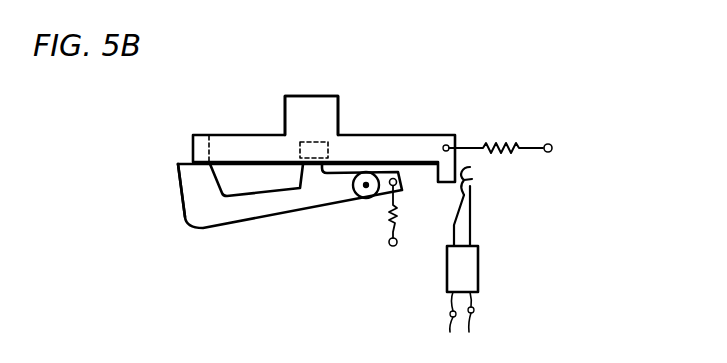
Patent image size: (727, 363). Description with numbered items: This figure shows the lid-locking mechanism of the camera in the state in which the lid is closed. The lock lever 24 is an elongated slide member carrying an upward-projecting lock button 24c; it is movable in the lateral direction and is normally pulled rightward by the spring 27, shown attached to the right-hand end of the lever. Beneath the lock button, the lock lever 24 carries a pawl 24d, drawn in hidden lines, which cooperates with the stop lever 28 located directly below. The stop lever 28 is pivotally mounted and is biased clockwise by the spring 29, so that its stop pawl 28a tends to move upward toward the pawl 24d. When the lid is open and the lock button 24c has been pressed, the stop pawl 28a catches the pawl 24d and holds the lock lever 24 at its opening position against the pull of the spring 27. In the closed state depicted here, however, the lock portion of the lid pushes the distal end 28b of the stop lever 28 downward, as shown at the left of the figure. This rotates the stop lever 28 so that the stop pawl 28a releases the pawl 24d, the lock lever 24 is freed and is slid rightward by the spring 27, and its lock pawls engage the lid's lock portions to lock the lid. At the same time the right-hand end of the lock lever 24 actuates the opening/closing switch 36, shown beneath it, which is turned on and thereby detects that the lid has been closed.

The lock lever 24 is at (415, 147).
The lock button 24c is at (310, 100).
The pawl 24d is at (322, 141).
The spring 27 is at (500, 140).
The stop lever 28 is at (260, 205).
The stop pawl 28a is at (316, 164).
The distal end 28b is at (183, 165).
The spring 29 is at (380, 217).
The opening/closing switch 36 is at (465, 263).